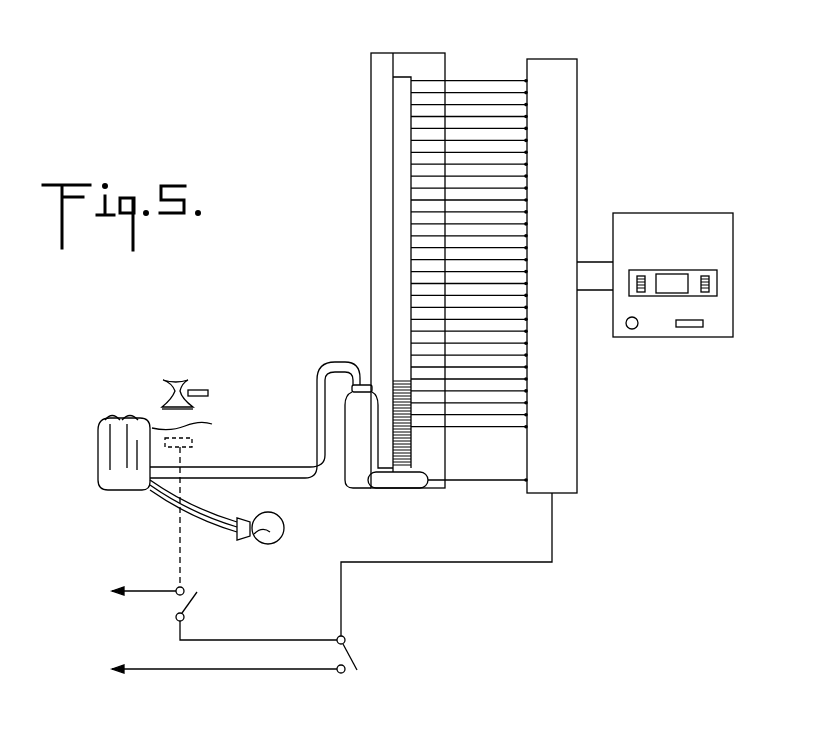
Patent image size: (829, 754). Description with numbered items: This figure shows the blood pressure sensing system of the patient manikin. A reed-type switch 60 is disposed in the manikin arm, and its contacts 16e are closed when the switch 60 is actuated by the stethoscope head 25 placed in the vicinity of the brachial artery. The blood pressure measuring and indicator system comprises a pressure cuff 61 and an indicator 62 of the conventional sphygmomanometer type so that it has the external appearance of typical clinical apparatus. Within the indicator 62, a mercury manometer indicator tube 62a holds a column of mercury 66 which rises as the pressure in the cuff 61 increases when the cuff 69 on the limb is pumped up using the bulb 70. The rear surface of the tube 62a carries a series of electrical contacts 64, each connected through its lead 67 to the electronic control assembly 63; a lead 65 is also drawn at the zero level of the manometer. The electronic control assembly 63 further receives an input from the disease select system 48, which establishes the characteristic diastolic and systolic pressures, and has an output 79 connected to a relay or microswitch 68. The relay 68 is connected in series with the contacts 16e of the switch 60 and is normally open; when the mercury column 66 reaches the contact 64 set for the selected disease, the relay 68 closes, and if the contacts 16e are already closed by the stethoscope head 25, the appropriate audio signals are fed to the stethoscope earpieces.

The stethoscope head 25 is at (176, 383).
The disease select system 48 is at (715, 218).
The reed-type switch 60 is at (192, 442).
The pressure cuff 61 is at (97, 451).
The blood pressure measuring and indicator system 62 is at (354, 120).
The mercury manometer indicator tube 62a is at (397, 152).
The electronic control assembly 63 is at (577, 122).
The electrical contacts 64 is at (416, 103).
The zero lead 65 is at (473, 483).
The column of mercury 66 is at (393, 382).
The lead 67 is at (493, 104).
The relay or microswitch 68 is at (362, 648).
The cuff 69 is at (105, 495).
The bulb 70 is at (285, 527).
The output 79 is at (494, 565).
The contacts of switch 16e is at (166, 604).